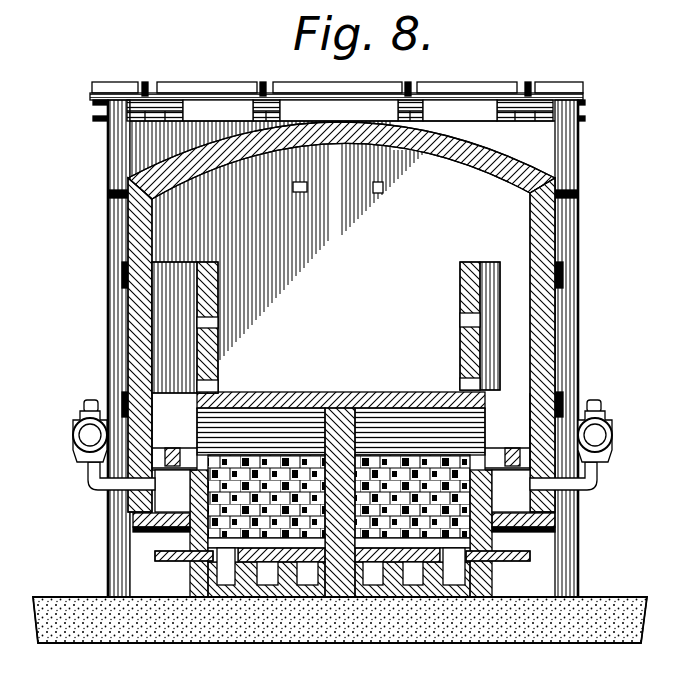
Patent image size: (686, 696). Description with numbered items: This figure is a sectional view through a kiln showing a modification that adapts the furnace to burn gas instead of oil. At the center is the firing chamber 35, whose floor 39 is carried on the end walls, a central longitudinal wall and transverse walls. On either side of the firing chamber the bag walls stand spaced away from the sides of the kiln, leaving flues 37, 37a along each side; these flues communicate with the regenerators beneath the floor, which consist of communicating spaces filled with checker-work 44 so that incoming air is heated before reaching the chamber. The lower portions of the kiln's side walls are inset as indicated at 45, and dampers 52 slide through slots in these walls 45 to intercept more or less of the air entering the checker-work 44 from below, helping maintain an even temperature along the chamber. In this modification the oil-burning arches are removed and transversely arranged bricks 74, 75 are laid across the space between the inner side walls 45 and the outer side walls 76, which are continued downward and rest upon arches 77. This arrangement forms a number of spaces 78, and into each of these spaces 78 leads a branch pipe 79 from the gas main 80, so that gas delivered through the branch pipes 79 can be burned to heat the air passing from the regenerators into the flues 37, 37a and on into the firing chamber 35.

The firing chamber 35 is at (277, 240).
The flue 37 is at (175, 370).
The flue 37a is at (510, 338).
The floor of the firing chamber 39 is at (338, 410).
The checker-work 44 is at (412, 490).
The inset lower side walls 45 is at (192, 543).
The damper 52 is at (176, 555).
The transversely arranged brick 74 is at (183, 463).
The transversely arranged brick 75 is at (163, 447).
The outer side wall 76 is at (135, 244).
The arch 77 is at (133, 522).
The space 78 is at (170, 497).
The branch pipe 79 is at (100, 481).
The gas main 80 is at (73, 430).